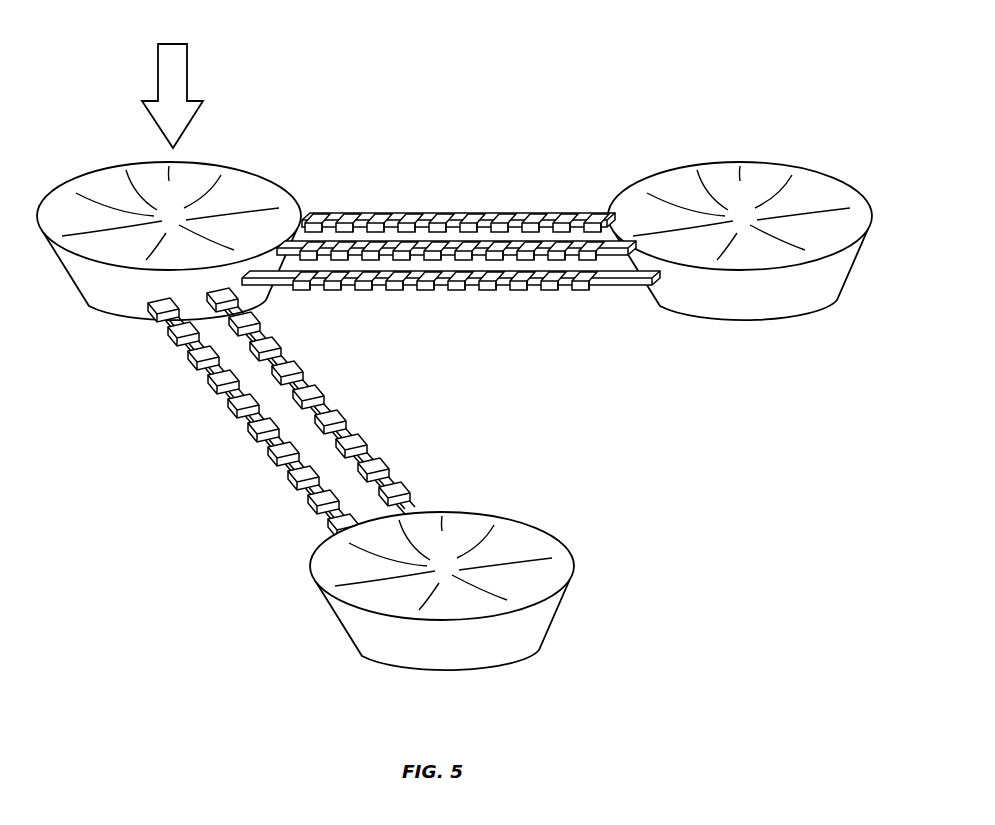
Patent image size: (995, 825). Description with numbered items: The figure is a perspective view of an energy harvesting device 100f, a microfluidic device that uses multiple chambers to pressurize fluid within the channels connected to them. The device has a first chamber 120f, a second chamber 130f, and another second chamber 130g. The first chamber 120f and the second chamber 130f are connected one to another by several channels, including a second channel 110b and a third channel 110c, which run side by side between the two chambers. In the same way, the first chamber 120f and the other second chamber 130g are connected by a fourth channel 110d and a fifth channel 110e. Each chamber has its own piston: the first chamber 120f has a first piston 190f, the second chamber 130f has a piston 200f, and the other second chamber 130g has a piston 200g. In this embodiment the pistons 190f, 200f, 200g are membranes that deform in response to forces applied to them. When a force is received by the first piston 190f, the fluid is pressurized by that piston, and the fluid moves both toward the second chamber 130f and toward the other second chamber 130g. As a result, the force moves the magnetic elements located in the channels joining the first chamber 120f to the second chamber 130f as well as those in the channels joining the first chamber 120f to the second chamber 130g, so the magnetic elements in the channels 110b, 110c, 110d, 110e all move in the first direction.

The energy harvesting device 100f is at (752, 58).
The first piston 190f is at (242, 183).
The first chamber 120f is at (117, 295).
The second channel 110b is at (330, 250).
The third channel 110c is at (458, 218).
The fifth channel 110e is at (443, 283).
The fourth channel 110d is at (238, 418).
The piston 200f is at (760, 170).
The second chamber 130f is at (715, 297).
The piston 200g is at (345, 574).
The second chamber 130g is at (350, 633).